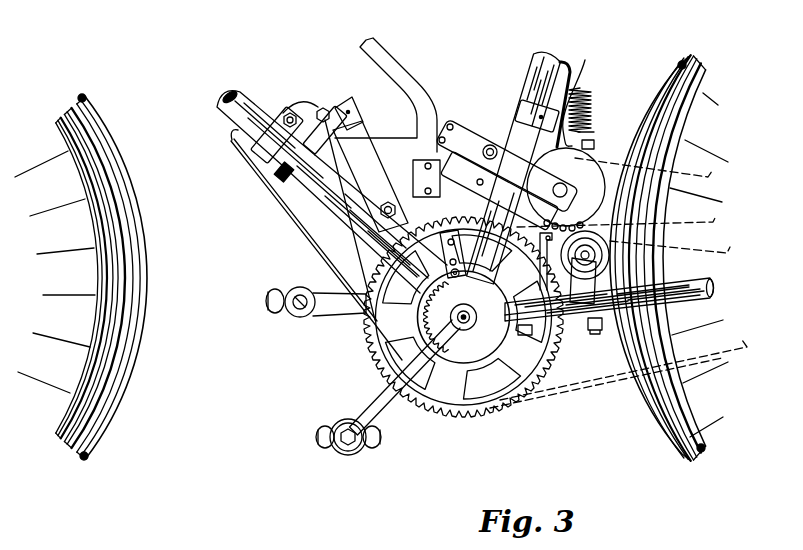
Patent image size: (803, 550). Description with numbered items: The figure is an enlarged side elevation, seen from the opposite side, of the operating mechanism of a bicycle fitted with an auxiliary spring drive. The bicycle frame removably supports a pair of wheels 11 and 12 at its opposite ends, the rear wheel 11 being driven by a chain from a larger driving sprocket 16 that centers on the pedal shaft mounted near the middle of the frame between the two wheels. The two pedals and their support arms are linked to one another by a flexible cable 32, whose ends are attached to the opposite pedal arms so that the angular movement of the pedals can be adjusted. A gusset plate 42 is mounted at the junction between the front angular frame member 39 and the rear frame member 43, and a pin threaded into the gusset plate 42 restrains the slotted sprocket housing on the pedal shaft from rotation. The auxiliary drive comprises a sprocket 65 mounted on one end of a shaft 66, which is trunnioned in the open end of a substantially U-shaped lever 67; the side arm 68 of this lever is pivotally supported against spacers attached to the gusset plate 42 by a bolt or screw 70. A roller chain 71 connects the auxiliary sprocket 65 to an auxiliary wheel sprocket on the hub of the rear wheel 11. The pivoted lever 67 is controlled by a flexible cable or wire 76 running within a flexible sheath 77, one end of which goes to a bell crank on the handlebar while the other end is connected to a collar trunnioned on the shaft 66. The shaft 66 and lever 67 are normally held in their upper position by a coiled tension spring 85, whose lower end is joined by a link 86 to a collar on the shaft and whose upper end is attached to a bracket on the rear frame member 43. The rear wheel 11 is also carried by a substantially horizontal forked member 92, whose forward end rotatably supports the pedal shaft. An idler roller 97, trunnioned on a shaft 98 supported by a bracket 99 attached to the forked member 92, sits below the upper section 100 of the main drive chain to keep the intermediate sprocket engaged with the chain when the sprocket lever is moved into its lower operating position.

The rear wheel 11 is at (650, 415).
The wheel 12 is at (130, 378).
The driving sprocket 16 is at (455, 423).
The flexible cable 32 is at (368, 258).
The front angular frame member 39 is at (215, 106).
The gusset plate 42 is at (388, 140).
The rear frame member 43 is at (547, 57).
The sprocket 65 is at (592, 147).
The shaft 66 is at (563, 189).
The U-shaped lever 67 is at (462, 147).
The side arm 68 is at (462, 120).
The bolt or screw 70 is at (490, 145).
The roller chain 71 is at (685, 170).
The flexible cable or wire 76 is at (441, 231).
The flexible sheath 77 is at (310, 217).
The coiled tension spring 85 is at (590, 90).
The link 86 is at (586, 62).
The horizontal forked member 92 is at (720, 280).
The idler roller 97 is at (571, 283).
The shaft 98 is at (600, 258).
The bracket 99 is at (601, 320).
The upper section of the main drive chain 100 is at (687, 218).